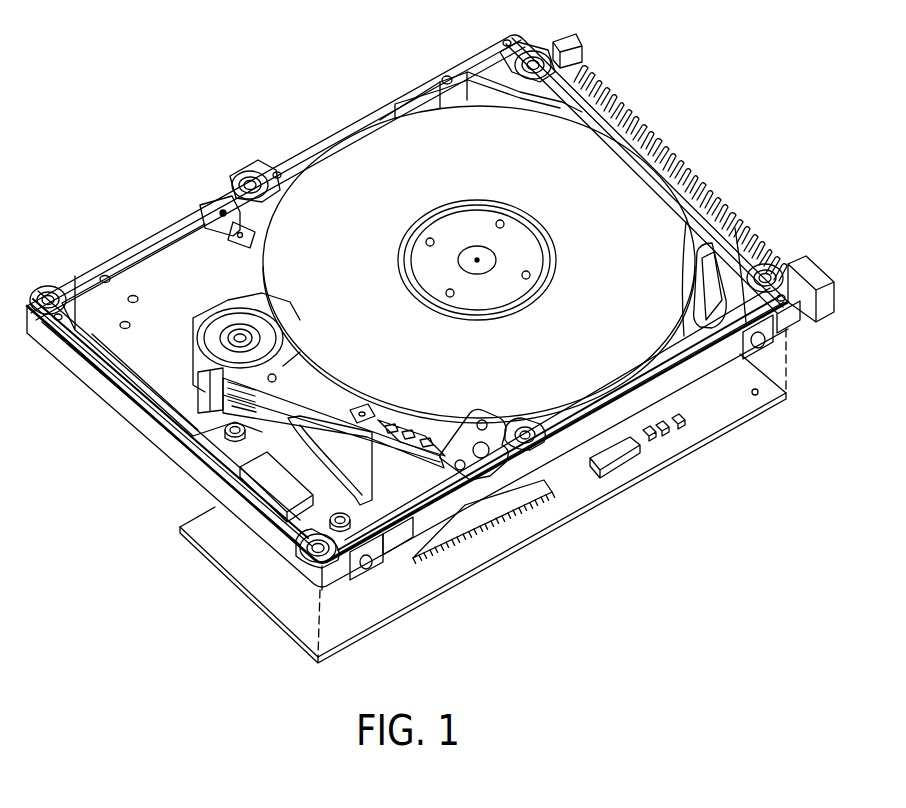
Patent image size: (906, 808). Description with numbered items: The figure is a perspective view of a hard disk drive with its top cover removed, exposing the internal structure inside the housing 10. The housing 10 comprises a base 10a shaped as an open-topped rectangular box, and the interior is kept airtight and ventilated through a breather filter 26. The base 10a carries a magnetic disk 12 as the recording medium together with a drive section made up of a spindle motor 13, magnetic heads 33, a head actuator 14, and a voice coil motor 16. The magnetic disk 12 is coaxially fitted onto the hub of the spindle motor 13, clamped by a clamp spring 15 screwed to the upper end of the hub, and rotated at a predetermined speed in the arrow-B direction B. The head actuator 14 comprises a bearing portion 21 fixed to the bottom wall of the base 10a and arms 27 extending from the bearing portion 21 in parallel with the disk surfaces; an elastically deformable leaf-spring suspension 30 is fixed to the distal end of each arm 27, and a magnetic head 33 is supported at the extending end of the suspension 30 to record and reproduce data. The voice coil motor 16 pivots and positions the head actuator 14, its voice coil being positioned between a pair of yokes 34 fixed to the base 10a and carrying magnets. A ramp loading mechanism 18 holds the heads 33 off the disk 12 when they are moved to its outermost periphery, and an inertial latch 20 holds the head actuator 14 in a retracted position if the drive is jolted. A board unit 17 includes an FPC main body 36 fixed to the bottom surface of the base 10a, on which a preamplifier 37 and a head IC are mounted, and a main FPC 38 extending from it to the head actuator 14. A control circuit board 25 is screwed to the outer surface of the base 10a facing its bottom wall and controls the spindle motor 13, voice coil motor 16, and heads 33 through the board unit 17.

The housing 10 is at (462, 52).
The base 10a is at (393, 483).
The magnetic disk 12 is at (398, 133).
The spindle motor 13 is at (562, 257).
The head actuator 14 is at (291, 364).
The clamp spring 15 is at (507, 212).
The voice coil motor 16 is at (140, 259).
The board unit 17 is at (228, 451).
The ramp loading mechanism 18 is at (488, 461).
The inertial latch 20 is at (199, 214).
The bearing portion 21 is at (273, 325).
The control circuit board 25 is at (593, 494).
The breather filter 26 is at (707, 310).
The arm 27 is at (348, 402).
The suspension 30 is at (399, 428).
The magnetic head 33 is at (446, 482).
The yoke 34 is at (130, 352).
The FPC main body 36 is at (305, 520).
The preamplifier 37 is at (266, 478).
The main FPC 38 is at (326, 430).
The arrow-B direction B is at (358, 298).